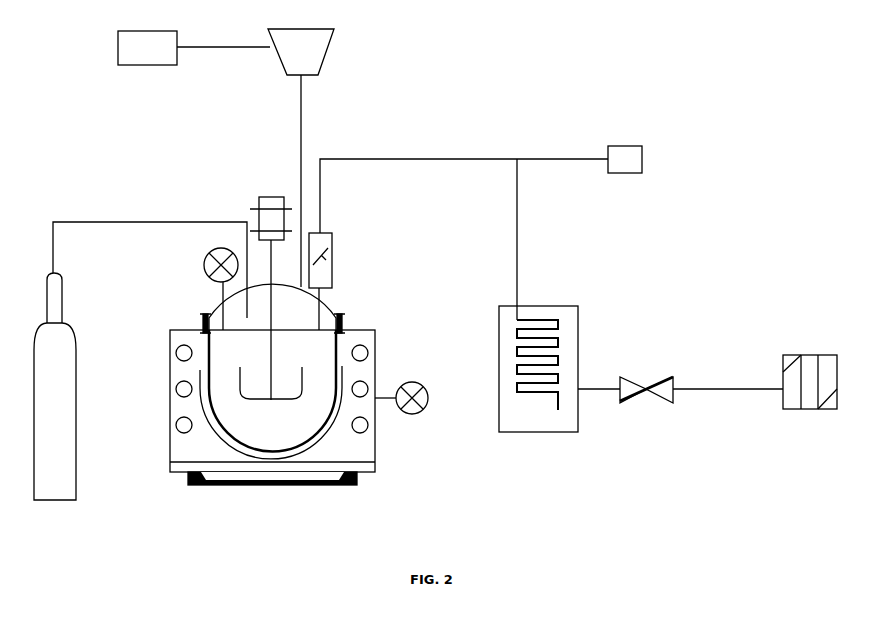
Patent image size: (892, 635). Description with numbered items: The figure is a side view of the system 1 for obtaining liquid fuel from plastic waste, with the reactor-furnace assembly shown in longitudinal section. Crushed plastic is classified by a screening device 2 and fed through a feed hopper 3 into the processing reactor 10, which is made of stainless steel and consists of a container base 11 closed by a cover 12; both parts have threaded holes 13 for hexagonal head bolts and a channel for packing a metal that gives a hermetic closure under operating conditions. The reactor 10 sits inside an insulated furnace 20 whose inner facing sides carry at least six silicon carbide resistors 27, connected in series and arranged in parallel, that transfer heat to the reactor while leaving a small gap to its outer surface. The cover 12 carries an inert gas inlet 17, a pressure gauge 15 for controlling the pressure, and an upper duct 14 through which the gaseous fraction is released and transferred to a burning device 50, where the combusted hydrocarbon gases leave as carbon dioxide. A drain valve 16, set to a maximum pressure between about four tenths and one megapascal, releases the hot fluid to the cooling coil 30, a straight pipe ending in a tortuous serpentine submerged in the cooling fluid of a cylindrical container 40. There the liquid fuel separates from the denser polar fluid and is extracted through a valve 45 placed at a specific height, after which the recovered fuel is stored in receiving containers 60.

The system 1 is at (571, 75).
The screening device 2 is at (131, 69).
The feed hopper 3 is at (333, 62).
The reactor 10 is at (225, 419).
The container base 11 is at (267, 457).
The cover 12 is at (336, 303).
The holes 13 is at (200, 317).
The upper duct 14 is at (421, 152).
The pressure gauge 15 is at (200, 262).
The drain valve 16 is at (339, 246).
The inert gas inlet 17 is at (91, 220).
The furnace 20 is at (323, 461).
The silicon carbide resistors 27 is at (172, 355).
The cooling coil 30 is at (512, 396).
The container 40 is at (588, 312).
The valve 45 is at (637, 406).
The burning device 50 is at (621, 183).
The receiving containers 60 is at (790, 415).